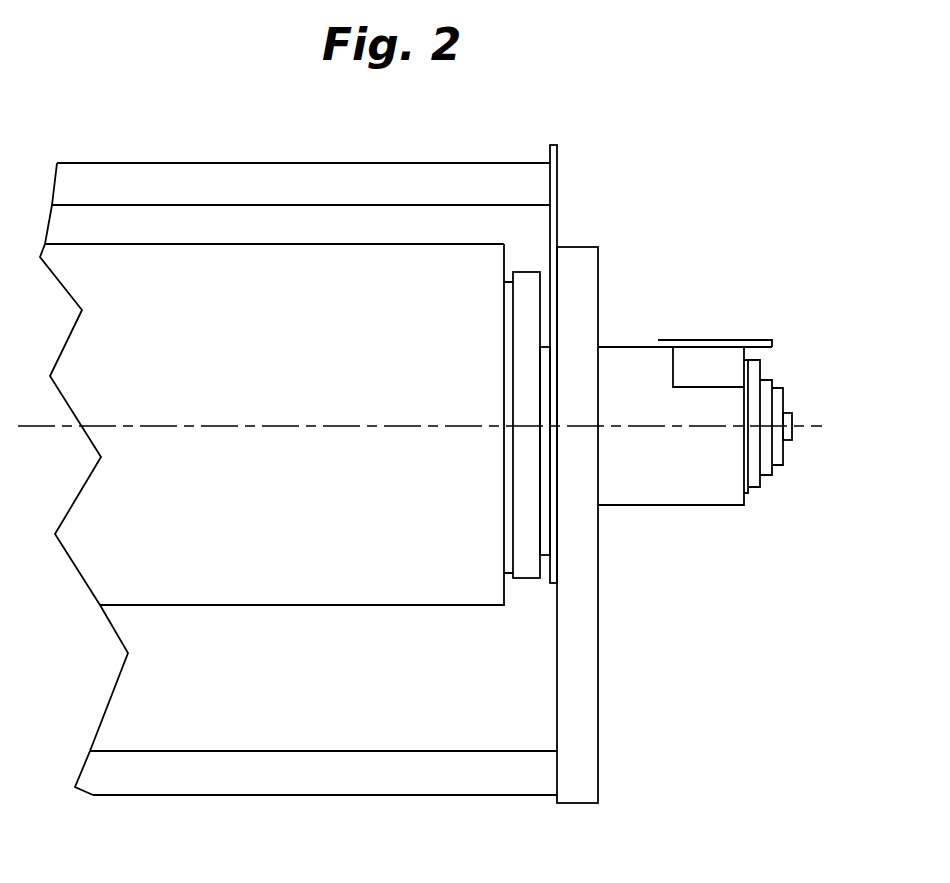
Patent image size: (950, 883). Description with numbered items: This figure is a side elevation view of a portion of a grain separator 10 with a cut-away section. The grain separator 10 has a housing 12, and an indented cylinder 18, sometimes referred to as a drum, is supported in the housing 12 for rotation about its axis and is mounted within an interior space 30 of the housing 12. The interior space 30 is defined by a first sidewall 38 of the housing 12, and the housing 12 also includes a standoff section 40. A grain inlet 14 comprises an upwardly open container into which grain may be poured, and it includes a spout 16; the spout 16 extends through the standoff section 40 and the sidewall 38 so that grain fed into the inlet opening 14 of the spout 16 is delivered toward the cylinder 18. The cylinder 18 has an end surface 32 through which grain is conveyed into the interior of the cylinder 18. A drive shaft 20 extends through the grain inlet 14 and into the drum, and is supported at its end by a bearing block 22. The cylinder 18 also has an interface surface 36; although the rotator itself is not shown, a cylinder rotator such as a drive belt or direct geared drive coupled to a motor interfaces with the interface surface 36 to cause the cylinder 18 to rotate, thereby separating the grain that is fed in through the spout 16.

The grain separator 10 is at (708, 173).
The housing 12 is at (350, 130).
The grain inlet 14 is at (717, 331).
The spout 16 is at (620, 358).
The indented cylinder 18 is at (482, 593).
The drive shaft 20 is at (788, 423).
The bearing block 22 is at (778, 387).
The interior space 30 is at (443, 217).
The end surface 32 is at (540, 553).
The interface surface 36 is at (527, 285).
The first sidewall 38 is at (560, 183).
The standoff section 40 is at (598, 237).